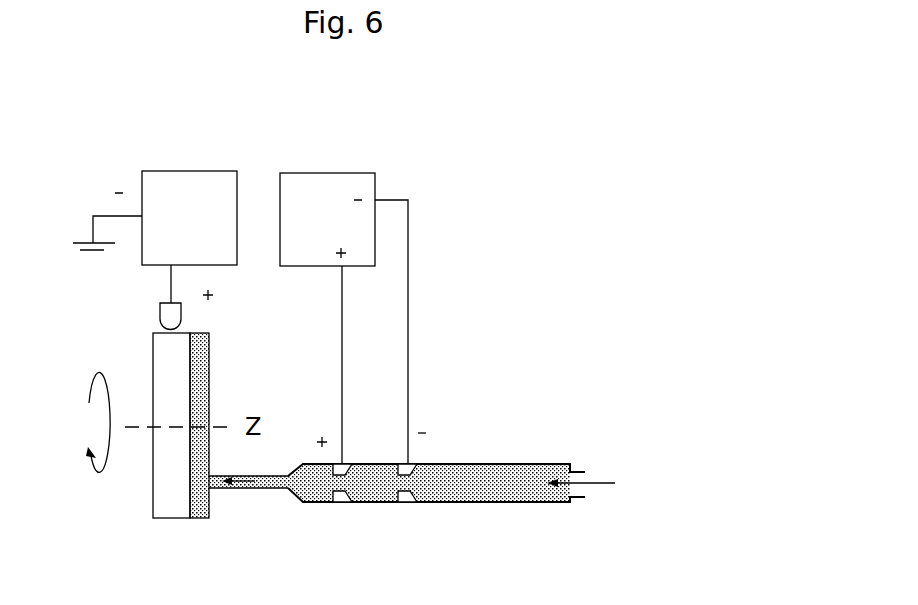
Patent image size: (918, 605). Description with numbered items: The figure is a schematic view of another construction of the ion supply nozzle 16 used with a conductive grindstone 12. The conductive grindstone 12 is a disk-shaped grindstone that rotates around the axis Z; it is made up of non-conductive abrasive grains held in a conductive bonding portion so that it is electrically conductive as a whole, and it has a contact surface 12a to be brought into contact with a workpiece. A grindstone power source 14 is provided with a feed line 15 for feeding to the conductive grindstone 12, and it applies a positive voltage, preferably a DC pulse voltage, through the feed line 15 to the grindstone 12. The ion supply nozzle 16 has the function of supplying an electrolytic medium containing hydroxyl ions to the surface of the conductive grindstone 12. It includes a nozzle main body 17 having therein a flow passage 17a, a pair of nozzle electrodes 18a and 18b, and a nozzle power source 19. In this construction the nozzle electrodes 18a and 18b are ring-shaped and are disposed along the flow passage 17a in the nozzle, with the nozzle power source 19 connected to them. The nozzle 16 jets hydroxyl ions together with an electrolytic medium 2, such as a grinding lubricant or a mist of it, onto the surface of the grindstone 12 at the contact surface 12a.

The electrolytic medium 2 is at (252, 488).
The conductive grindstone 12 is at (167, 505).
The contact surface 12a is at (216, 379).
The grindstone power source 14 is at (183, 193).
The feed line 15 is at (168, 292).
The ion supply nozzle 16 is at (465, 287).
The nozzle main body 17 is at (487, 463).
The flow passage 17a is at (508, 492).
The nozzle electrode 18a is at (345, 500).
The nozzle electrode 18b is at (407, 500).
The nozzle power source 19 is at (317, 185).